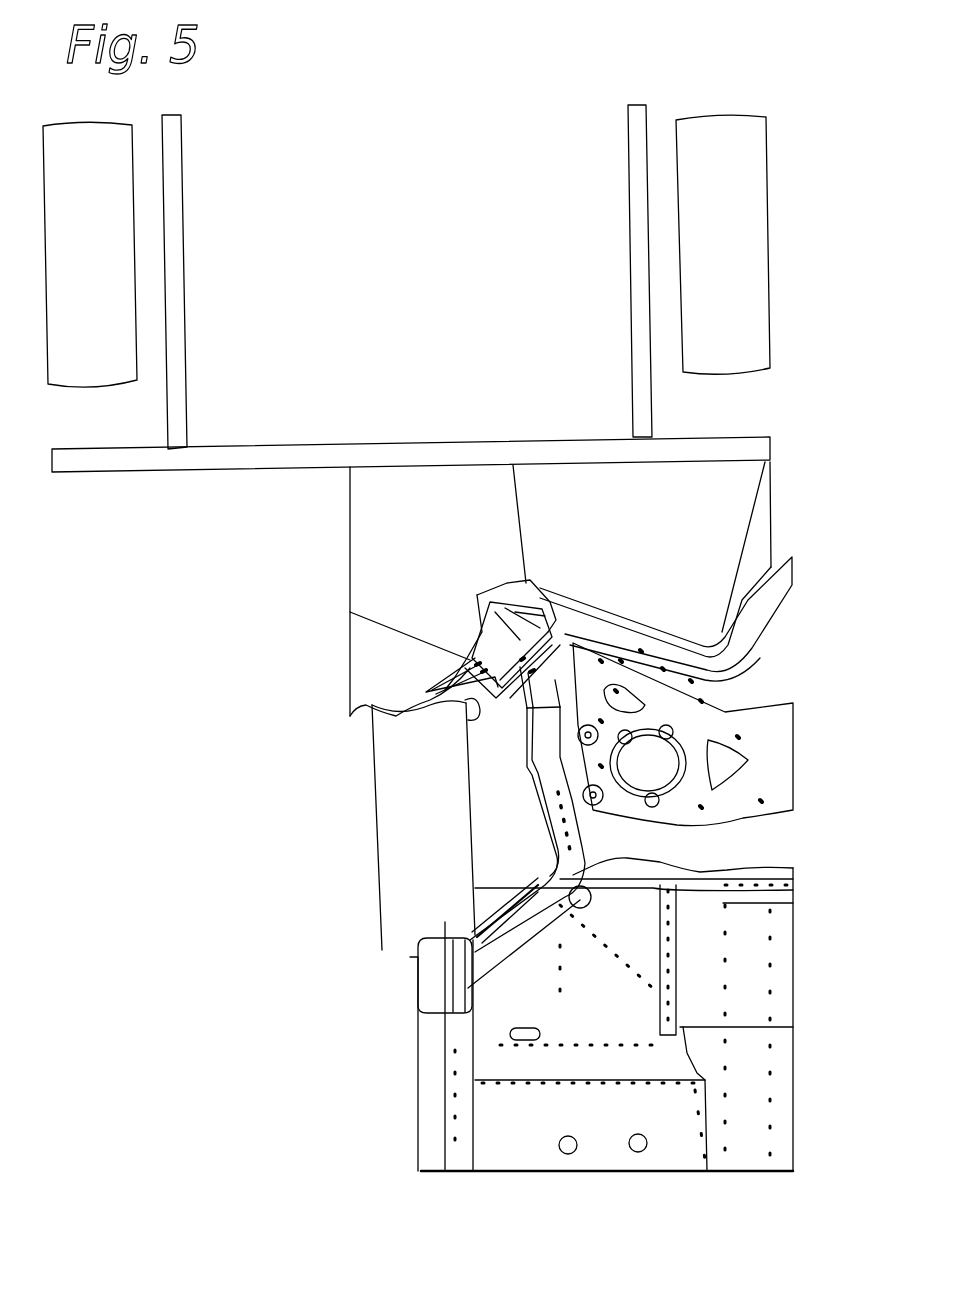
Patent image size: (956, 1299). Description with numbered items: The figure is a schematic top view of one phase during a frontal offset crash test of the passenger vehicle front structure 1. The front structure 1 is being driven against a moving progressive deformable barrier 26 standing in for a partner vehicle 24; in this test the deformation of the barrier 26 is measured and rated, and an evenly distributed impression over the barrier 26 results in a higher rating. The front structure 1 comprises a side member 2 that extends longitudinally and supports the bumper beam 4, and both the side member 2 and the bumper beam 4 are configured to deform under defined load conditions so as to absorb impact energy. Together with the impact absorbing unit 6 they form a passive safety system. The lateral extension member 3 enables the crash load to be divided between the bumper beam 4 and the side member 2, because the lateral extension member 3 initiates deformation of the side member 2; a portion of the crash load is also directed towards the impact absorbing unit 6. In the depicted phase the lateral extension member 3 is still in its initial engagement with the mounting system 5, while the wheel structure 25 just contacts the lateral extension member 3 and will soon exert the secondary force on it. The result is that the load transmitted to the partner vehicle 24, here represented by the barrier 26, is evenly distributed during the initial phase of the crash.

The passenger vehicle front structure 1 is at (783, 518).
The side member 2 is at (518, 778).
The lateral extension member 3 is at (433, 688).
The bumper beam 4 is at (758, 637).
The mounting system 5 is at (502, 696).
The impact absorbing unit 6 is at (478, 628).
The partner vehicle 24 is at (199, 489).
The wheel structure 25 is at (340, 875).
The moving progressive deformable barrier 26 is at (344, 494).